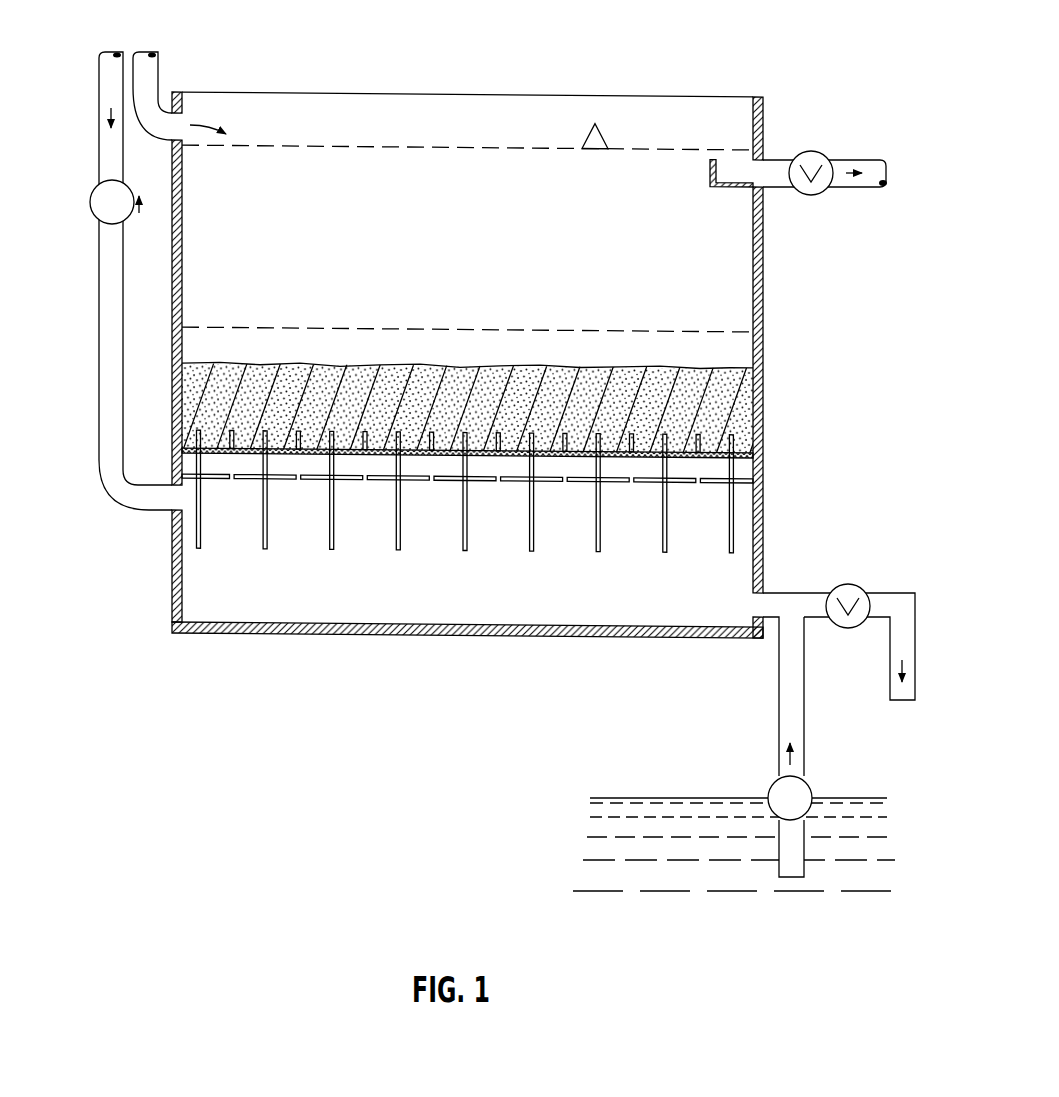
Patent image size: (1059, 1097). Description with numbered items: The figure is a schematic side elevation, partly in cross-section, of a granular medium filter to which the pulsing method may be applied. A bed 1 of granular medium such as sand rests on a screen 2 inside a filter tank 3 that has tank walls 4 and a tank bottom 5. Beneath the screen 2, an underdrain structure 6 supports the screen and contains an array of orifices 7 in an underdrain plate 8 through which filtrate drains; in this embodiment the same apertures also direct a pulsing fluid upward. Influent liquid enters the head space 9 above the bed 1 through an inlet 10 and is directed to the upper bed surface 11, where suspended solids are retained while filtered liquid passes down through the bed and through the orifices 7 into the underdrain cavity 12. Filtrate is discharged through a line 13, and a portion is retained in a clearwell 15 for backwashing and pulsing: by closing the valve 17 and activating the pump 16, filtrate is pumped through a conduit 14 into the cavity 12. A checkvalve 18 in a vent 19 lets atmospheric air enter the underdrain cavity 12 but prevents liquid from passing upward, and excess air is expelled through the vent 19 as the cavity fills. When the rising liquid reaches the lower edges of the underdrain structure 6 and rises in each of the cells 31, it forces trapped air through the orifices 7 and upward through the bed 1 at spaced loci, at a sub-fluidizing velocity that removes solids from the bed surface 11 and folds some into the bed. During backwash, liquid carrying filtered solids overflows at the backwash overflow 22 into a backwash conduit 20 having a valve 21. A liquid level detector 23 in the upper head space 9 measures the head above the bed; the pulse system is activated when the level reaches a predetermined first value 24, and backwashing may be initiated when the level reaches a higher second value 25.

The bed 1 is at (411, 380).
The screen 2 is at (487, 380).
The filter tank 3 is at (770, 346).
The tank walls 4 is at (178, 284).
The tank bottom 5 is at (456, 630).
The underdrain structure 6 is at (737, 528).
The orifices 7 is at (230, 483).
The underdrain plate 8 is at (248, 478).
The head space 9 is at (441, 253).
The inlet 10 is at (143, 92).
The upper bed surface 11 is at (357, 364).
The underdrain cavity 12 is at (478, 606).
The line 13 is at (890, 646).
The conduit 14 is at (793, 708).
The clearwell 15 is at (650, 810).
The pump 16 is at (804, 795).
The valve 17 is at (847, 585).
The checkvalve 18 is at (100, 194).
The vent 19 is at (107, 443).
The backwash conduit 20 is at (846, 160).
The valve 21 is at (798, 152).
The backwash overflow 22 is at (727, 190).
The liquid level detector 23 is at (585, 146).
The first value 24 is at (582, 329).
The second value 25 is at (357, 147).
The cells 31 is at (251, 527).